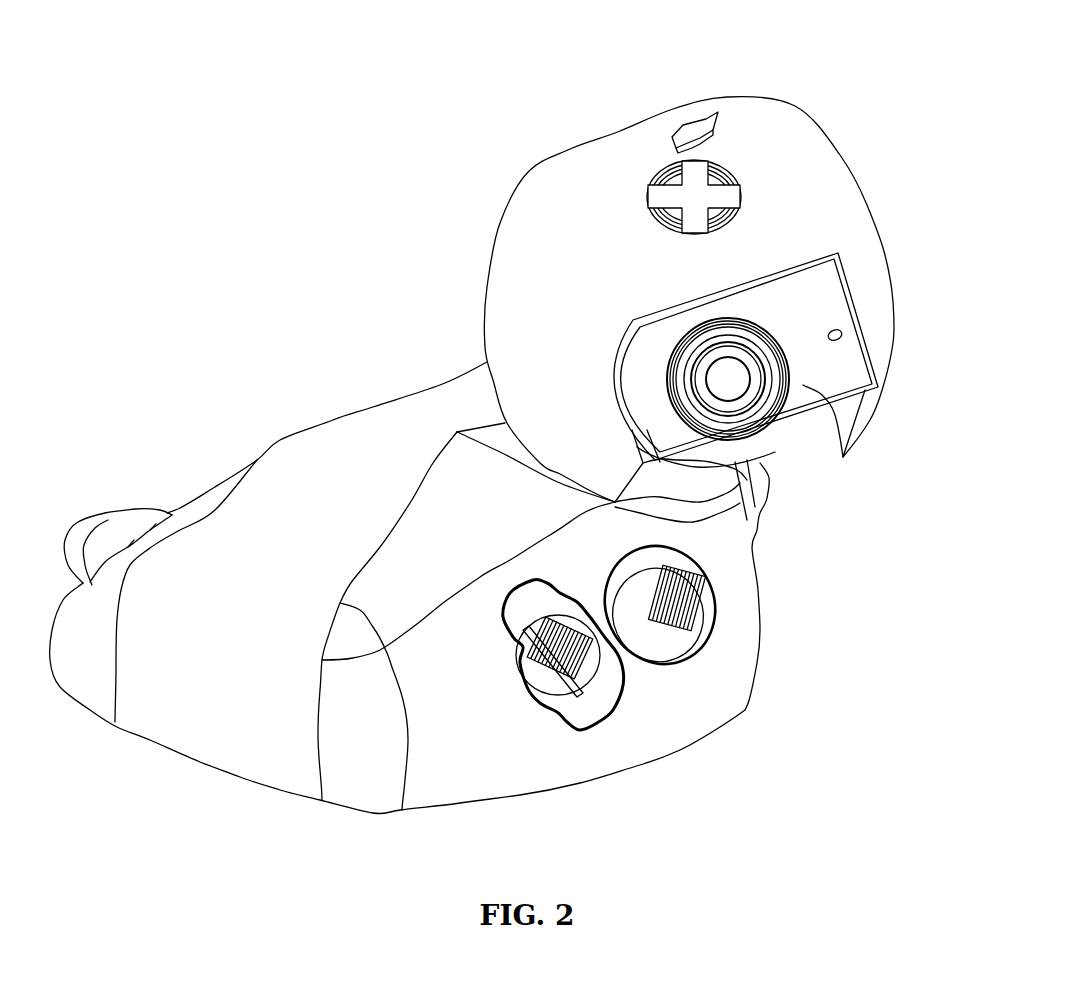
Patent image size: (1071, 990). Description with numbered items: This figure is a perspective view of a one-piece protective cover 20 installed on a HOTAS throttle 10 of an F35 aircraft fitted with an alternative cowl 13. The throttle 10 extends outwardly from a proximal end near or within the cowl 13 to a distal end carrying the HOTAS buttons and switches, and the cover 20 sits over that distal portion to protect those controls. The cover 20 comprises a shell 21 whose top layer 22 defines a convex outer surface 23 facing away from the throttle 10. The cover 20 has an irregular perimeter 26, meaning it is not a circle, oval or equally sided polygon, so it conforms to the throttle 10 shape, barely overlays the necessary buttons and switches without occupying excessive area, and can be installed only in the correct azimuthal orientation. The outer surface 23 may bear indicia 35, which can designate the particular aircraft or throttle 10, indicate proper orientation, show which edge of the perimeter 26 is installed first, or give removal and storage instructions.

The HOTAS throttle 10 is at (368, 104).
The cowl 13 is at (213, 697).
The protective cover 20 is at (629, 145).
The shell 21 is at (653, 137).
The top layer 22 is at (577, 170).
The outer surface 23 is at (692, 113).
The perimeter 26 is at (893, 270).
The indicia 35 is at (693, 115).